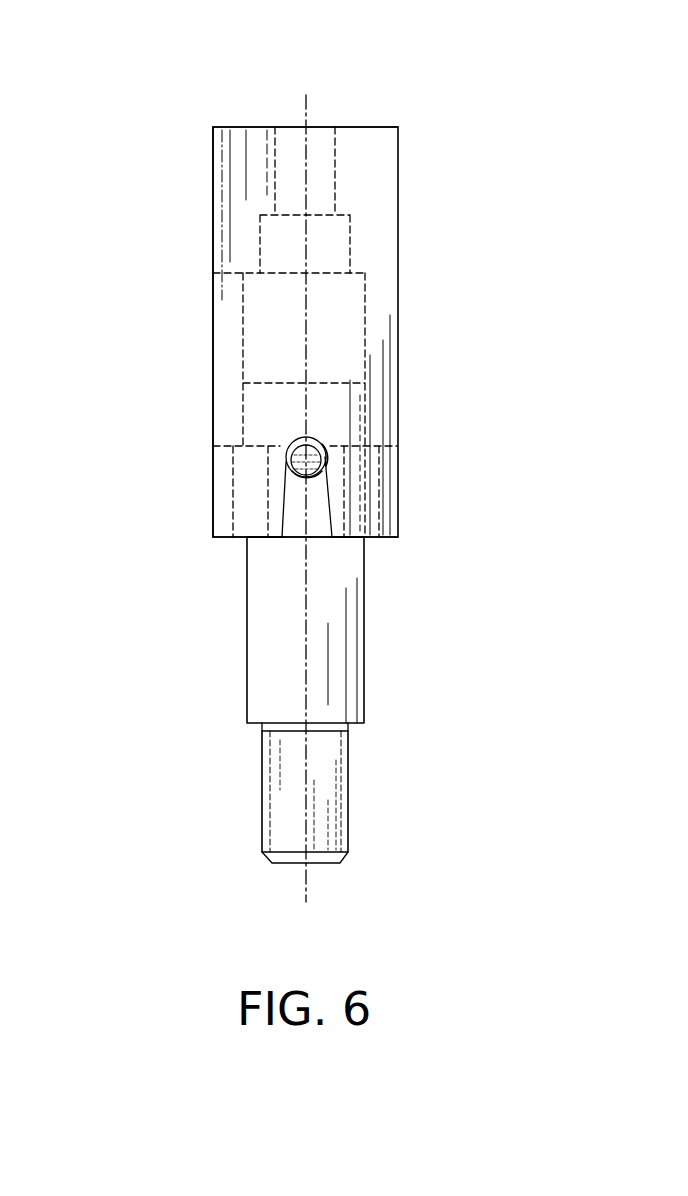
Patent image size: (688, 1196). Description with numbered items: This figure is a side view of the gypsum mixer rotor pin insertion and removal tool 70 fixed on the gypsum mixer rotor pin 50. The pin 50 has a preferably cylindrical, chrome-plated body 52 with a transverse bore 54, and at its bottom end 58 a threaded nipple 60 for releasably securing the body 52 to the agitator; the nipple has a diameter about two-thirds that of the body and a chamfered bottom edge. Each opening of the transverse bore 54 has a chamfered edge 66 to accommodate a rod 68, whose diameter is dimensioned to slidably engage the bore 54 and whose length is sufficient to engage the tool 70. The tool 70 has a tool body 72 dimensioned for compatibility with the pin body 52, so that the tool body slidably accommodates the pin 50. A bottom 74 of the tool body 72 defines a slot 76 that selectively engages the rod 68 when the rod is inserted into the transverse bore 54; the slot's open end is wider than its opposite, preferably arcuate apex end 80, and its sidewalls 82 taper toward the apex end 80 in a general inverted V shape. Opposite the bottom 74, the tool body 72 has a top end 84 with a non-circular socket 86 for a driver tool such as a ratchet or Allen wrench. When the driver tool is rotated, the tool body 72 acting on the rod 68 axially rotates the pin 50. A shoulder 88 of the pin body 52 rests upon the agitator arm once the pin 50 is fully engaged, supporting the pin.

The gypsum mixer rotor pin 50 is at (363, 715).
The body 52 is at (330, 686).
The transverse bore 54 is at (290, 487).
The bottom end 58 is at (391, 812).
The threaded nipple 60 is at (330, 838).
The chamfered edge 66 is at (313, 482).
The rod 68 is at (323, 467).
The mixer rotor pin insertion and removal tool 70 is at (321, 359).
The tool body 72 is at (213, 326).
The bottom 74 is at (398, 538).
The slot 76 is at (298, 525).
The apex end 80 is at (312, 430).
The sidewalls 82 is at (290, 498).
The top end 84 is at (248, 127).
The non-circular socket 86 is at (338, 142).
The shoulder 88 is at (262, 731).